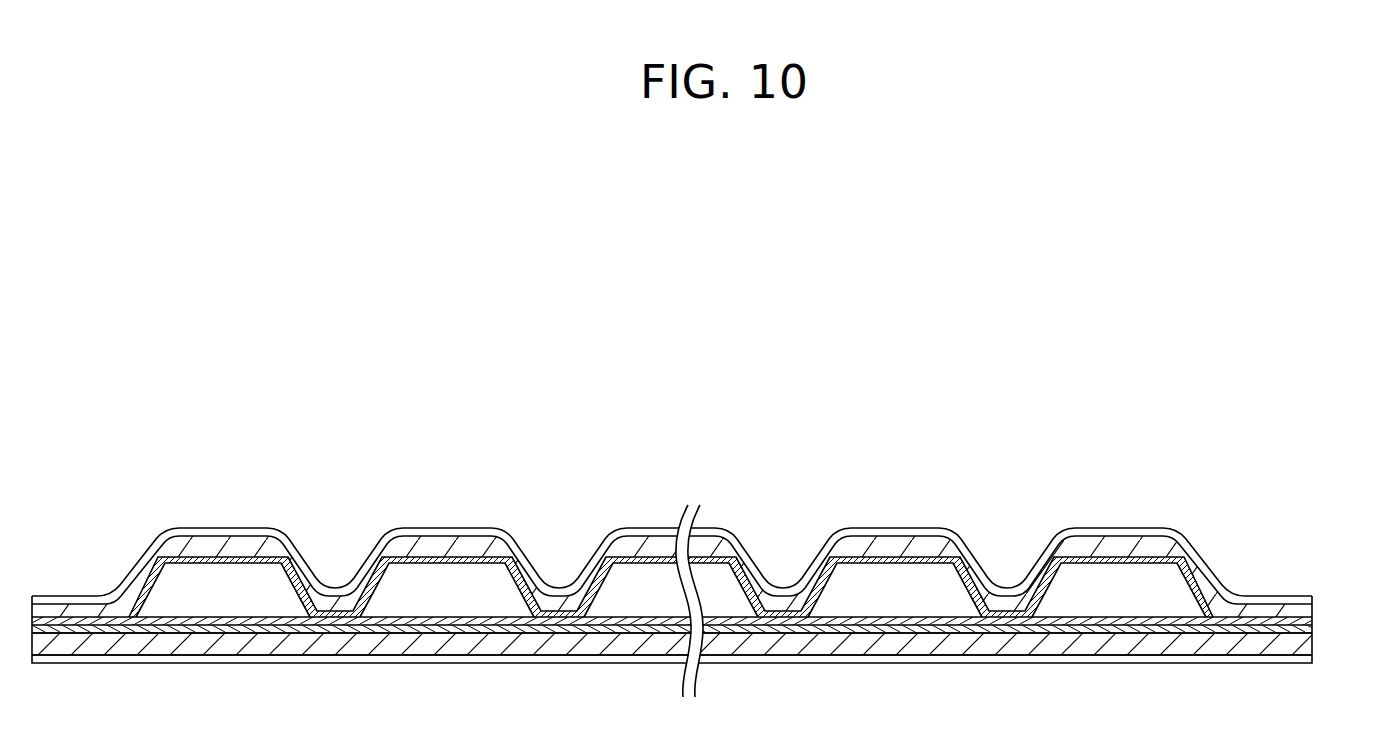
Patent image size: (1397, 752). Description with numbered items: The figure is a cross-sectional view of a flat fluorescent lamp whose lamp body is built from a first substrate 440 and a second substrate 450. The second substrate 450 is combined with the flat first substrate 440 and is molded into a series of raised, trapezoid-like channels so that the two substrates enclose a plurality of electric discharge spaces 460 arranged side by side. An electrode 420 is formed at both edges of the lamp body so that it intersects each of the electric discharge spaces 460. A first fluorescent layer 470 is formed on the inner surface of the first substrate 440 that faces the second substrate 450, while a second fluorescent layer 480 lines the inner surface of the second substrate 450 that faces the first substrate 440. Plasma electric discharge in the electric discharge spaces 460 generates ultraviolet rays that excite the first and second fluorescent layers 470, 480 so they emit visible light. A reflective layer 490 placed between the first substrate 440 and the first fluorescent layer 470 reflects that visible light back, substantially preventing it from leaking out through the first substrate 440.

The electrode 420 is at (1312, 600).
The first substrate 440 is at (1312, 644).
The second substrate 450 is at (1312, 610).
The electric discharge spaces 460 is at (889, 589).
The first fluorescent layer 470 is at (849, 634).
The second fluorescent layer 480 is at (930, 558).
The reflective layer 490 is at (915, 621).